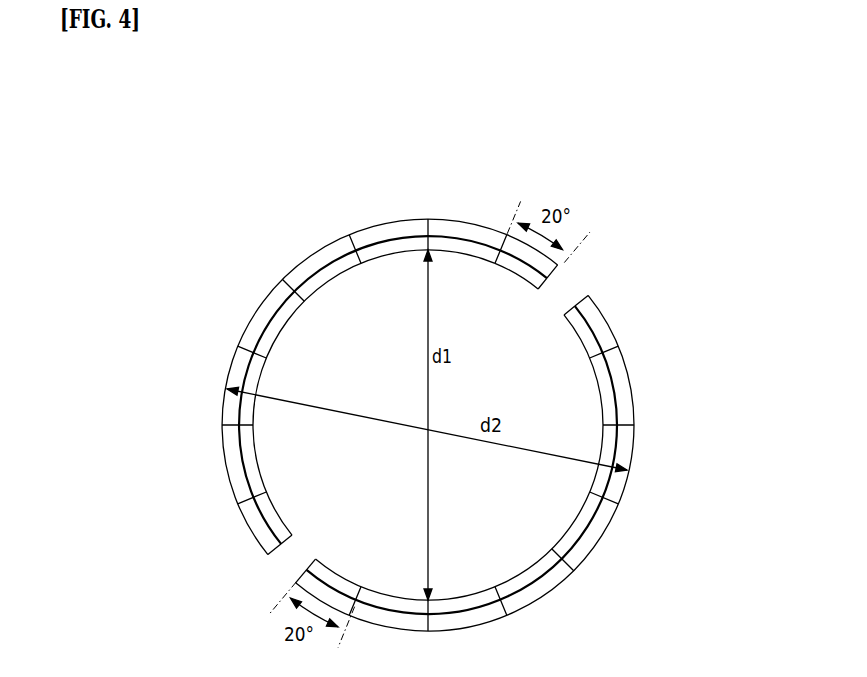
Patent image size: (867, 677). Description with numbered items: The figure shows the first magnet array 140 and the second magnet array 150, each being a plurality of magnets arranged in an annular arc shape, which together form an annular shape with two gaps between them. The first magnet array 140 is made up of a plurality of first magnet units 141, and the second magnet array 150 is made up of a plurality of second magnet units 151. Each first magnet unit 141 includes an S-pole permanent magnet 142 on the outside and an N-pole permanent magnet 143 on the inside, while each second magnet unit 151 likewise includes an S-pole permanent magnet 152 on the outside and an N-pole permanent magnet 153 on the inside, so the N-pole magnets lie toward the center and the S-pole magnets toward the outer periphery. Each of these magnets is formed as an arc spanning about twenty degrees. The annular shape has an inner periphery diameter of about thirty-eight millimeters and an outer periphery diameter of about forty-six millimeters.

The first magnet array 140 is at (330, 242).
The first magnet unit 141 is at (499, 117).
The S-pole permanent magnet 142 is at (497, 230).
The N-pole permanent magnet 143 is at (443, 236).
The second magnet array 150 is at (590, 552).
The second magnet unit 151 is at (727, 377).
The S-pole permanent magnet 152 is at (630, 380).
The N-pole permanent magnet 153 is at (617, 408).